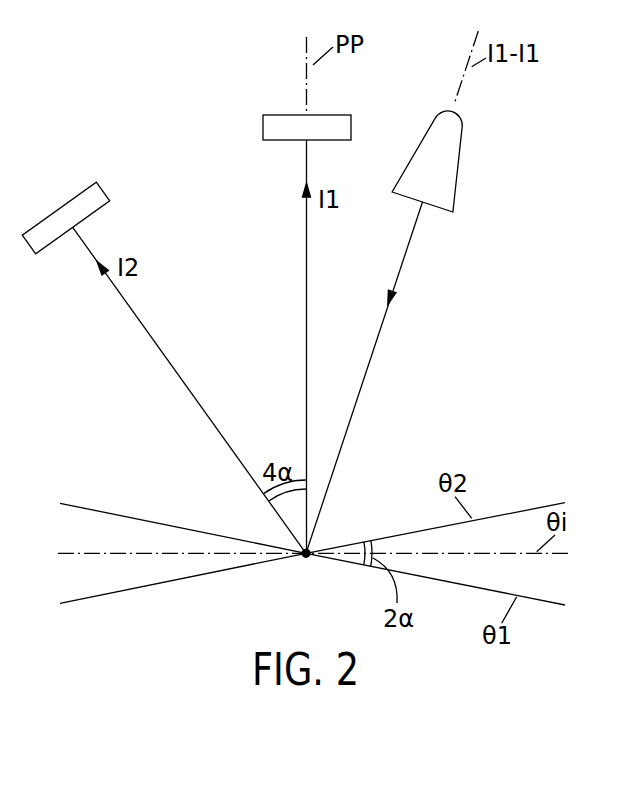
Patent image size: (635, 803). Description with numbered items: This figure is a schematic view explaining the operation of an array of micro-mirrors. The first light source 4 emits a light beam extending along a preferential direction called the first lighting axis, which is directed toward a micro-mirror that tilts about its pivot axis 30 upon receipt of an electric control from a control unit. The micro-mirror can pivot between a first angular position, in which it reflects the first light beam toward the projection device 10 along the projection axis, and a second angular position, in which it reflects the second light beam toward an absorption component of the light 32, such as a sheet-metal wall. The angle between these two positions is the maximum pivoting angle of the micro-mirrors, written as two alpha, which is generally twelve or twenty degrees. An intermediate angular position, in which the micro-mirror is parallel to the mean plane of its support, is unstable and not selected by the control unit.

The first light source 4 is at (463, 146).
The projection device 10 is at (351, 126).
The pivot axis 30 is at (310, 561).
The absorption component of the light 32 is at (72, 197).